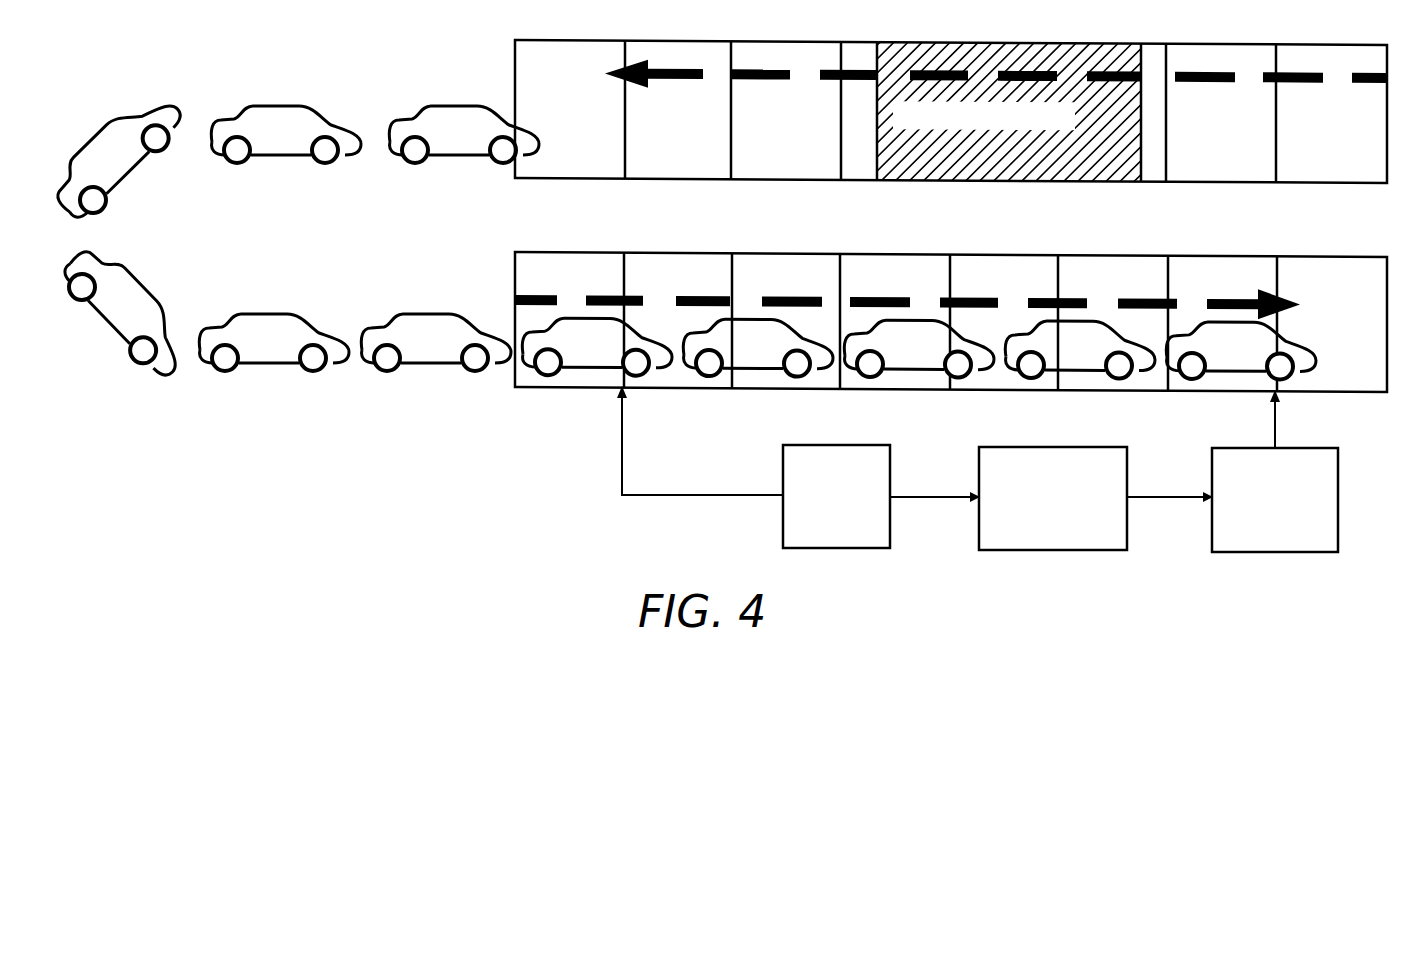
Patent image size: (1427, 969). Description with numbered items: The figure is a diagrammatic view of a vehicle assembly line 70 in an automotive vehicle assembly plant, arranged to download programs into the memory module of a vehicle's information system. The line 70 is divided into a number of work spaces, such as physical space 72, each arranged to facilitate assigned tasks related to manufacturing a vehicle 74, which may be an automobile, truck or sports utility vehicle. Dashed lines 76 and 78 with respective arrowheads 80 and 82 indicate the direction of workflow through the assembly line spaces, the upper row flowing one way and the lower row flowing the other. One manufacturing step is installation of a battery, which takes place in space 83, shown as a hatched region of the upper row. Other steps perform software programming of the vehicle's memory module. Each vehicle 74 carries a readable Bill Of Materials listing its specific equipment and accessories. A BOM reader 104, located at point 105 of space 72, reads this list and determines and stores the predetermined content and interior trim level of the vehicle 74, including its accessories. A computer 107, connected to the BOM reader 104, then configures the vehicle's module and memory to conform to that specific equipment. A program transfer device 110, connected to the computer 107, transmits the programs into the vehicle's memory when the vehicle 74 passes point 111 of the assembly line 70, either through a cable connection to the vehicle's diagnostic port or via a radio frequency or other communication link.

The vehicle assembly line 70 is at (459, 38).
The physical space 72 is at (558, 263).
The vehicle 74 is at (532, 347).
The dashed line 76 is at (748, 82).
The dashed line 78 is at (772, 292).
The arrowhead 80 is at (637, 82).
The arrowhead 82 is at (1288, 300).
The battery installation space 83 is at (1083, 179).
The BOM reader 104 is at (881, 496).
The point 105 is at (622, 415).
The computer 107 is at (1096, 498).
The program transfer device 110 is at (1338, 522).
The point 111 is at (1282, 398).